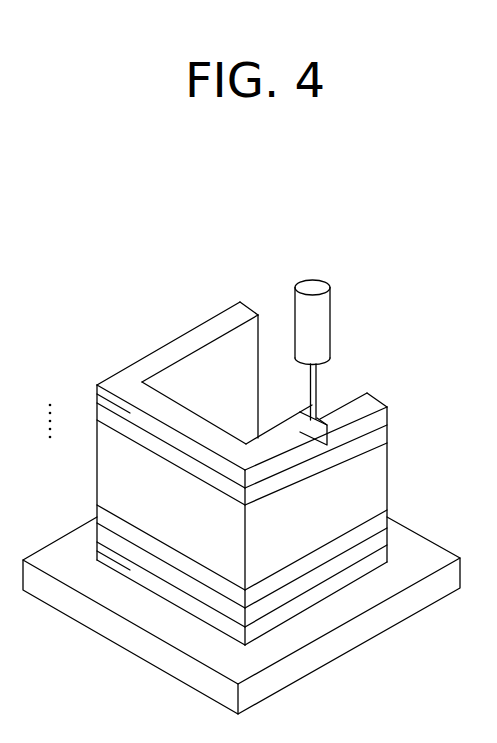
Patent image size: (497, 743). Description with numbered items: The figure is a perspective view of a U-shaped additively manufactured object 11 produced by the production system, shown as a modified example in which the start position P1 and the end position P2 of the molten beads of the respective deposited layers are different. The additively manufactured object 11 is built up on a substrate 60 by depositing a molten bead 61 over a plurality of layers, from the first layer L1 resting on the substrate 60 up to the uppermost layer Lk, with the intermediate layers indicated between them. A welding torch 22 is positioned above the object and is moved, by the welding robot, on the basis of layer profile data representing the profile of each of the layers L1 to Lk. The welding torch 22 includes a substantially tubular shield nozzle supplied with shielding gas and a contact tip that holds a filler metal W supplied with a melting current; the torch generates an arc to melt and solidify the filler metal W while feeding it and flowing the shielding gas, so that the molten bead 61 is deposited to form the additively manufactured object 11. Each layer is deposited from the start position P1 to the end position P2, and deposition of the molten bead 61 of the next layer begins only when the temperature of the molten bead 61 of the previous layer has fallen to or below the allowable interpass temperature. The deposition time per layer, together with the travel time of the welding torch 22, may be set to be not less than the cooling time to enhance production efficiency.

The additively manufactured object 11 is at (254, 459).
The welding torch 22 is at (322, 312).
The filler metal (wire) W is at (313, 388).
The substrate 60 is at (325, 623).
The molten bead 61 is at (348, 540).
The start position P1 is at (243, 311).
The end position P2 is at (370, 402).
The layer Lk is at (98, 398).
The layer L1 is at (84, 513).